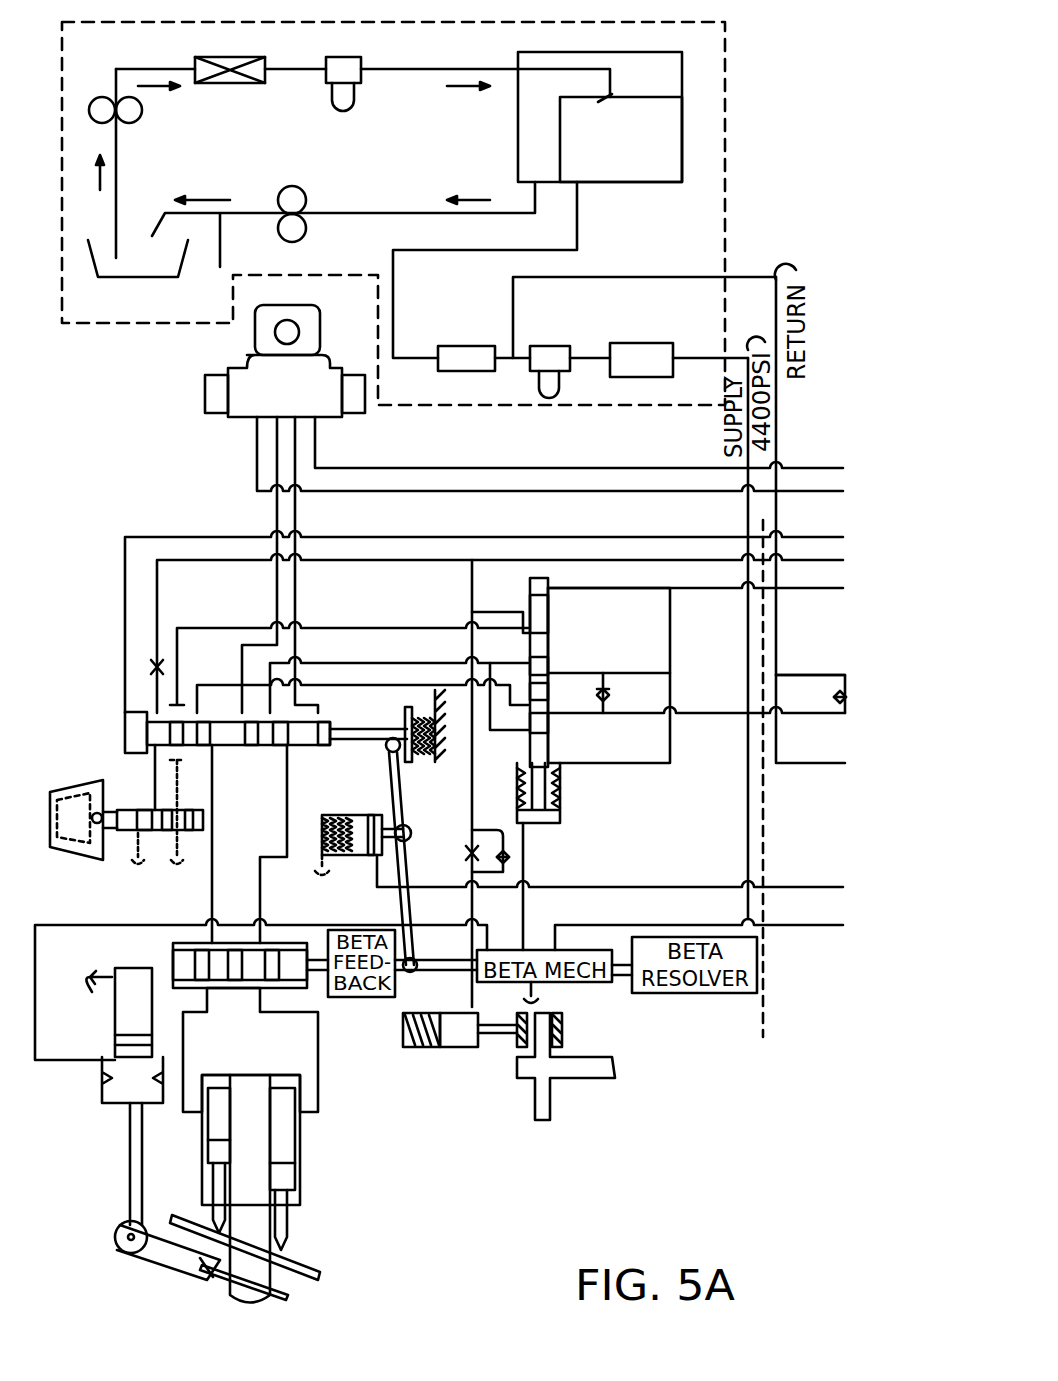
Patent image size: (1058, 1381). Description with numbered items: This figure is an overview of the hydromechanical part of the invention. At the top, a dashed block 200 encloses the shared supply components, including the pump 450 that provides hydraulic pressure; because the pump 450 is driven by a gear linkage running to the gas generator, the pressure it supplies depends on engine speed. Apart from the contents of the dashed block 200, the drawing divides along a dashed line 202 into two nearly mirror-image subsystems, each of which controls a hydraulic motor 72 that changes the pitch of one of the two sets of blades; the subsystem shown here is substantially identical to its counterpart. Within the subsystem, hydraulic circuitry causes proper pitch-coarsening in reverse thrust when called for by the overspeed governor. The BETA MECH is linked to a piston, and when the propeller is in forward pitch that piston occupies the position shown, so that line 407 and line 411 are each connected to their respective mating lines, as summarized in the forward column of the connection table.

The dashed block 200 is at (727, 80).
The pump 450 is at (625, 358).
The line 411 is at (790, 675).
The line 407 is at (786, 683).
The dashed line 202 is at (760, 1017).
The hydraulic motor 72 is at (318, 1178).